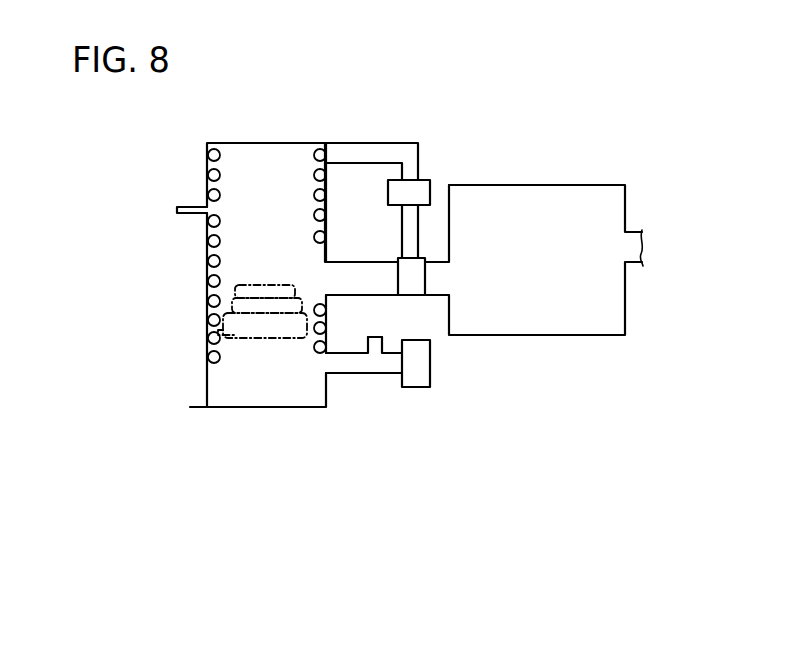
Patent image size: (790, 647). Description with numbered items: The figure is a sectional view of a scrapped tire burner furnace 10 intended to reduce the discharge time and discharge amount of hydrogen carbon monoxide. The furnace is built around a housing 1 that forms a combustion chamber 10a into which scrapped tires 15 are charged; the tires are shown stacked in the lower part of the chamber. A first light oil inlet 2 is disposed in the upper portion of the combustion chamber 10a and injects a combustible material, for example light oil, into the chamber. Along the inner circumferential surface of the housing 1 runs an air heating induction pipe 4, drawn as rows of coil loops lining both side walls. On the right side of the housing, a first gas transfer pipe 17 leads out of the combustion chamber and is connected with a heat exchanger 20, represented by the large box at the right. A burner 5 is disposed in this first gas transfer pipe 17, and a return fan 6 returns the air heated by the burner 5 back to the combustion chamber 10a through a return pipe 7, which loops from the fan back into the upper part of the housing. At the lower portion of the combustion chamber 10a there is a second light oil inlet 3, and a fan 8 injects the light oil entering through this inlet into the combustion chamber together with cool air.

The housing 1 is at (260, 143).
The first light oil inlet 2 is at (197, 205).
The second light oil inlet 3 is at (373, 340).
The air heating induction pipe 4 is at (232, 143).
The burner 5 is at (408, 270).
The return fan 6 is at (425, 190).
The return pipe 7 is at (403, 150).
The fan 8 is at (417, 387).
The burner furnace 10 is at (219, 210).
The combustion chamber 10a is at (275, 168).
The scrapped tires 15 is at (210, 335).
The first gas transfer pipe 17 is at (383, 288).
The heat exchanger 20 is at (603, 335).